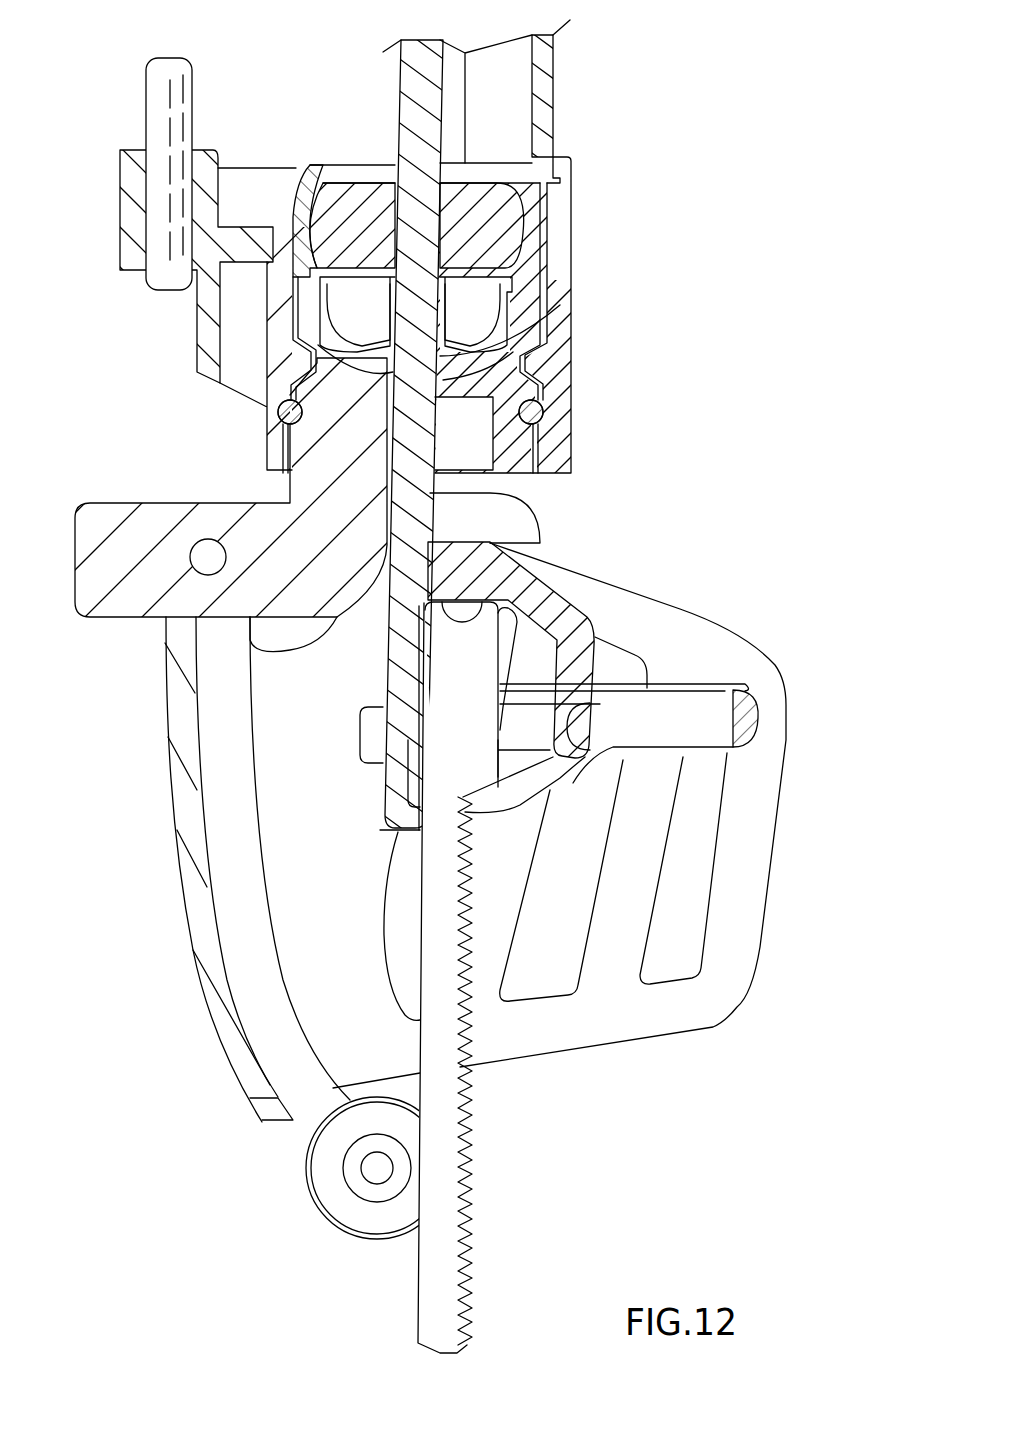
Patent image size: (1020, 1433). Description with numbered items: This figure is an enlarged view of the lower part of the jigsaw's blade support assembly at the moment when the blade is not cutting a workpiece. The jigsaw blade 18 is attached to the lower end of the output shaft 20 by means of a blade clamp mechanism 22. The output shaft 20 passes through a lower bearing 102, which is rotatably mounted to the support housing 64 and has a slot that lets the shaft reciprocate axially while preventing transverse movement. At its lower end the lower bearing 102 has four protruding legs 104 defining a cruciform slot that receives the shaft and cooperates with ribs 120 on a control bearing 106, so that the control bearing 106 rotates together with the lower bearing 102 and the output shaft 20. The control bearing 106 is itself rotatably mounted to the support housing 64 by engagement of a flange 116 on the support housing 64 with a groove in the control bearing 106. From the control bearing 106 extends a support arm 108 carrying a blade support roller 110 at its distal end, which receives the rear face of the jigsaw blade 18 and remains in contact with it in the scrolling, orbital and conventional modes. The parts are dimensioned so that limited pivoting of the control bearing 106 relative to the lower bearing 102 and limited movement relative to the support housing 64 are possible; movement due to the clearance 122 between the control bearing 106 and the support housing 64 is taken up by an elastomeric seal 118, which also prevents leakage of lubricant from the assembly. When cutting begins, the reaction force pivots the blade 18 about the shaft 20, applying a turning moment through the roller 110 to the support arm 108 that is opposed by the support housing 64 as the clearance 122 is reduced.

The jigsaw blade 18 is at (437, 1175).
The output shaft 20 is at (400, 690).
The blade clamp mechanism 22 is at (670, 632).
The support housing 64 is at (300, 198).
The lower bearing 102 is at (358, 195).
The protruding legs 104 is at (477, 308).
The control bearing 106 is at (514, 450).
The support arm 108 is at (192, 824).
The blade support roller 110 is at (330, 1190).
The flange 116 is at (530, 363).
The elastomeric seal 118 is at (540, 414).
The ribs 120 is at (367, 315).
The clearance 122 is at (290, 482).